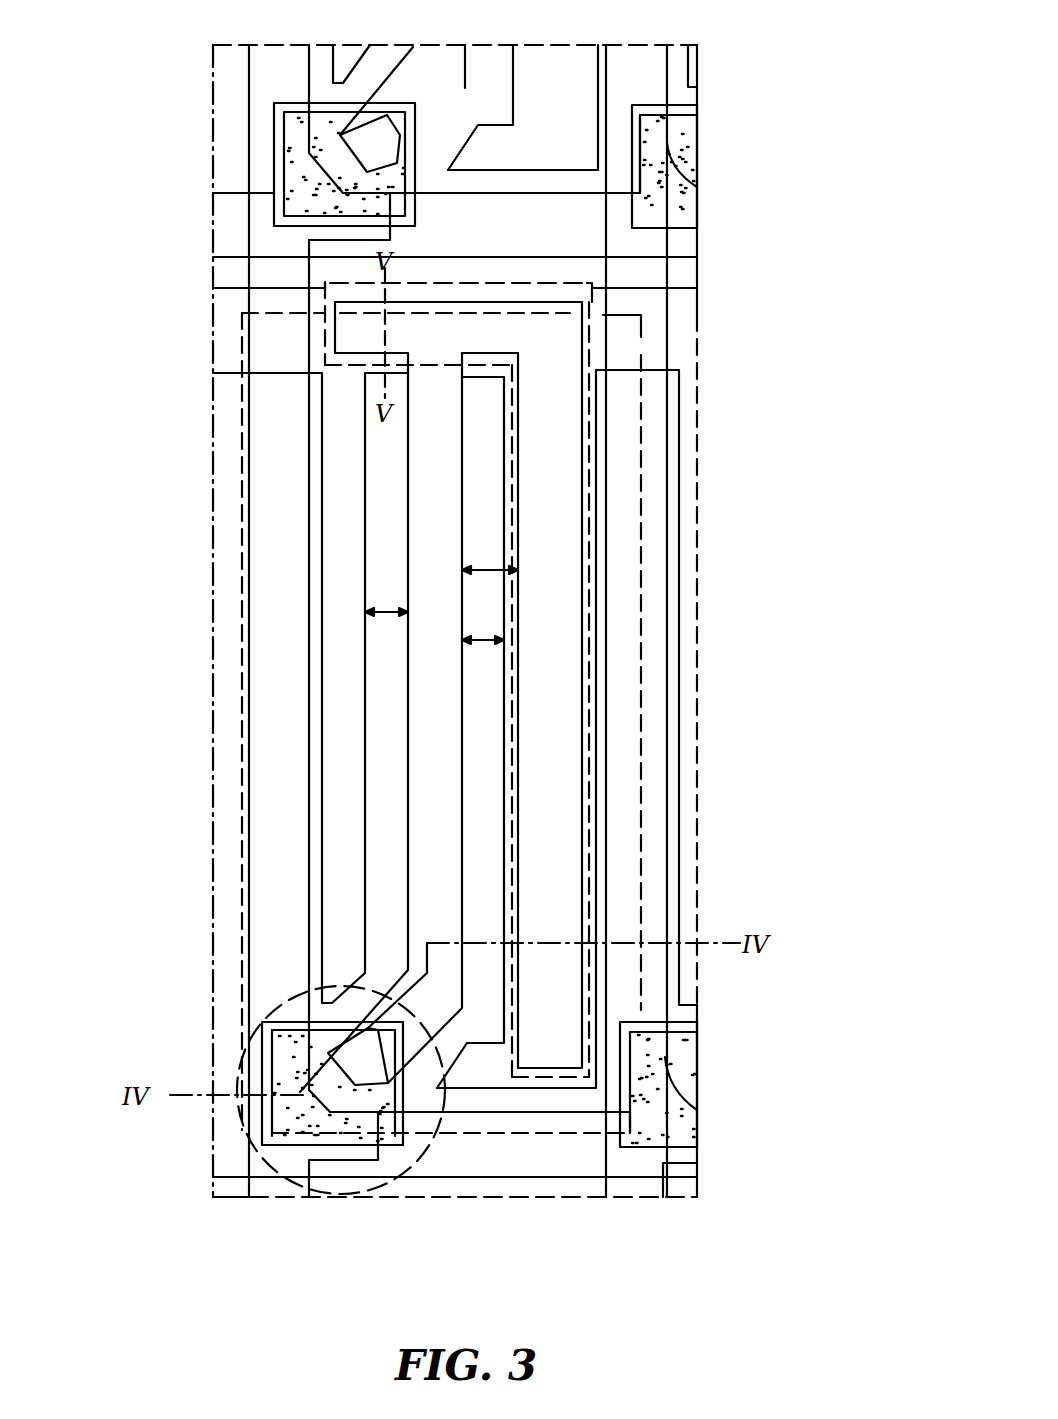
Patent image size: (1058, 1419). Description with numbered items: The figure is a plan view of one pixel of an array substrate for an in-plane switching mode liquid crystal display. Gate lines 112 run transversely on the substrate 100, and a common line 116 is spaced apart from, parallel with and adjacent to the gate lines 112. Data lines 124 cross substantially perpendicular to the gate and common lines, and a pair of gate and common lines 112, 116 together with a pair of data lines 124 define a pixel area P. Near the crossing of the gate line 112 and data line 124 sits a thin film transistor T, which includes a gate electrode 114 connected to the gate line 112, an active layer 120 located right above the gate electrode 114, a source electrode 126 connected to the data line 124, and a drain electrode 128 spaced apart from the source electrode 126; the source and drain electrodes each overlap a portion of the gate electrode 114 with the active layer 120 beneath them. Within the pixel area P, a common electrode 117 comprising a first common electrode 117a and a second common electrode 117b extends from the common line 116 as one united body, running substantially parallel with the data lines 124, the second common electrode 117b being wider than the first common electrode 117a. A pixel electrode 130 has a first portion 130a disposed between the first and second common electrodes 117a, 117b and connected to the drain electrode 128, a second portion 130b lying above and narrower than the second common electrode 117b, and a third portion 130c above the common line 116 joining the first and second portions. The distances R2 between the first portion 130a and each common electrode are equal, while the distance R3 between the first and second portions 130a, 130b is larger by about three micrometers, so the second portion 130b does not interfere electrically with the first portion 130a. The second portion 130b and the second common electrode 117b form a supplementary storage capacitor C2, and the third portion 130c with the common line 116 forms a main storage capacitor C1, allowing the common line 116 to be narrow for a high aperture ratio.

The substrate 100 is at (697, 1005).
The gate line 112 is at (466, 192).
The gate electrode 114 is at (262, 1027).
The active layer 120 is at (262, 1057).
The source electrode 126 is at (367, 1163).
The drain electrode 128 is at (377, 1000).
The common line 116 is at (592, 287).
The pixel area P is at (641, 337).
The data line 124 is at (245, 735).
The common electrode 117 is at (266, 665).
The first common electrode 117a is at (310, 597).
The second common electrode 117b is at (500, 500).
The pixel electrode 130 is at (616, 608).
The first portion of pixel electrode 130a is at (465, 793).
The second portion of pixel electrode 130b is at (582, 903).
The third portion of pixel electrode 130c is at (548, 283).
The main storage capacitor C1 is at (497, 283).
The supplementary storage capacitor C2 is at (598, 560).
The distance R2 is at (434, 613).
The distance R3 is at (490, 557).
The thin film transistor T is at (263, 1160).